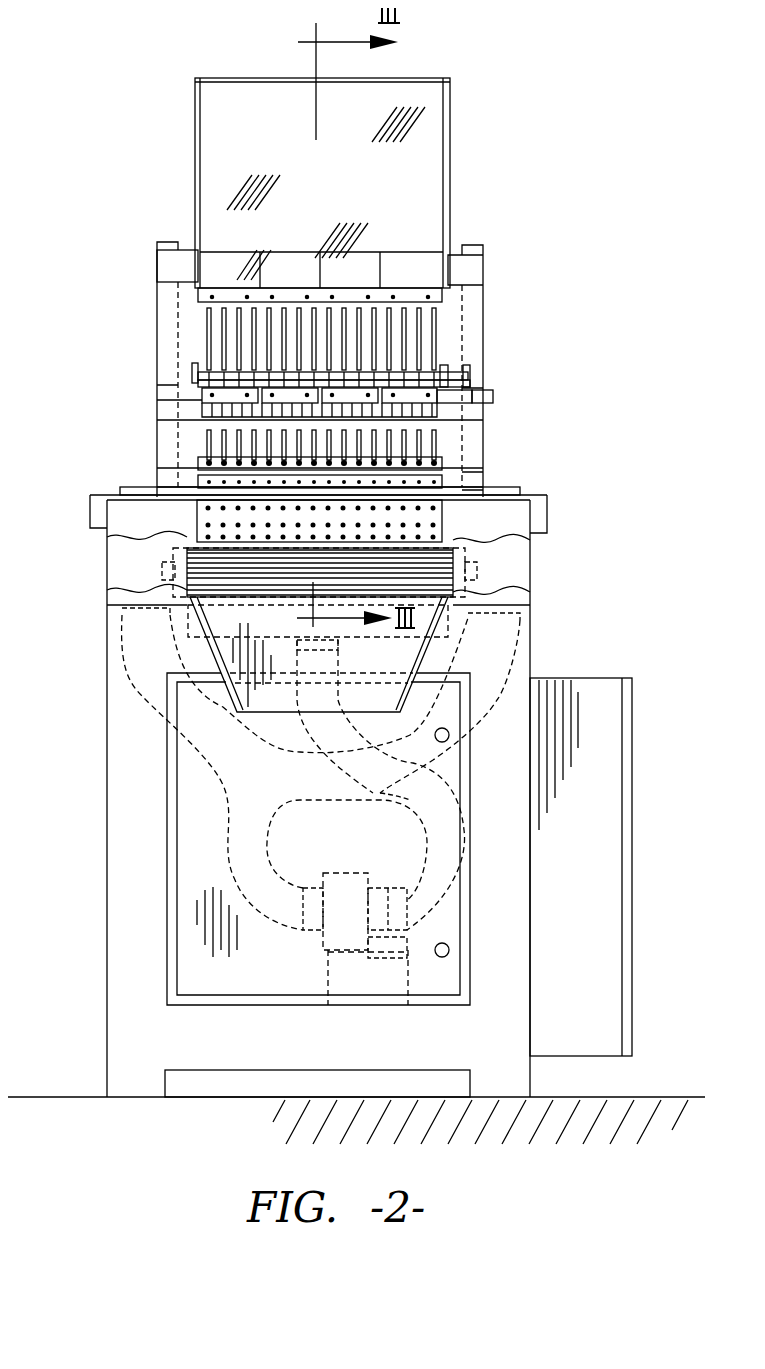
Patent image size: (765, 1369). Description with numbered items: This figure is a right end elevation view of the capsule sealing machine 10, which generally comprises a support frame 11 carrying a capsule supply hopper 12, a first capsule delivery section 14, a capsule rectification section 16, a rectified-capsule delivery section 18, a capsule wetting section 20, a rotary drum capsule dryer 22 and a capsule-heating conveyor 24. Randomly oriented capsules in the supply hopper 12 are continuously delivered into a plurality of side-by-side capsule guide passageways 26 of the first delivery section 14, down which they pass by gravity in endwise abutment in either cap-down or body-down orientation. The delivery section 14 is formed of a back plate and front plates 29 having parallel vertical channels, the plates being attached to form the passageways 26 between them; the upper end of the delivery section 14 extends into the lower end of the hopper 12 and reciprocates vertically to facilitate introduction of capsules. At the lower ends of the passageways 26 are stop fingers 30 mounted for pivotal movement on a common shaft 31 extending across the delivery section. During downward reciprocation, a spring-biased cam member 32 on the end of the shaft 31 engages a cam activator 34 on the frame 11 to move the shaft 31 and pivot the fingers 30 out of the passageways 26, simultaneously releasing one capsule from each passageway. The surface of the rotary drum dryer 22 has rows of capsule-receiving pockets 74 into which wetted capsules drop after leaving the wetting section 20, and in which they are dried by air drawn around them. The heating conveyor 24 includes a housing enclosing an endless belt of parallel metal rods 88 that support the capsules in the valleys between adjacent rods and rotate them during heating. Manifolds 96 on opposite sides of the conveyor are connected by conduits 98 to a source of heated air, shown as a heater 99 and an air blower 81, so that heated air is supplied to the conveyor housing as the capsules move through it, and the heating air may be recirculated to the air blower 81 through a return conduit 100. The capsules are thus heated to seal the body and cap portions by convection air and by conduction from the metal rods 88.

The capsule sealing machine 10 is at (577, 276).
The support frame 11 is at (490, 262).
The capsule supply hopper 12 is at (448, 157).
The first capsule delivery section 14 is at (198, 337).
The capsule rectification section 16 is at (437, 400).
The rectified-capsule delivery section 18 is at (448, 448).
The capsule wetting section 20 is at (198, 452).
The rotary drum capsule dryer 22 is at (452, 531).
The capsule-heating conveyor 24 is at (193, 577).
The capsule guide passageways 26 is at (414, 236).
The front plates 29 is at (203, 305).
The stop fingers 30 is at (193, 381).
The common shaft 31 is at (190, 373).
The spring-biased cam member 32 is at (462, 368).
The cam activator 34 is at (494, 396).
The capsule-receiving pockets 74 is at (440, 508).
The air blower 81 is at (358, 872).
The metal rods 88 is at (235, 582).
The manifolds 96 is at (120, 538).
The conduits 98 is at (143, 697).
The heater 99 is at (420, 882).
The return conduit 100 is at (443, 908).